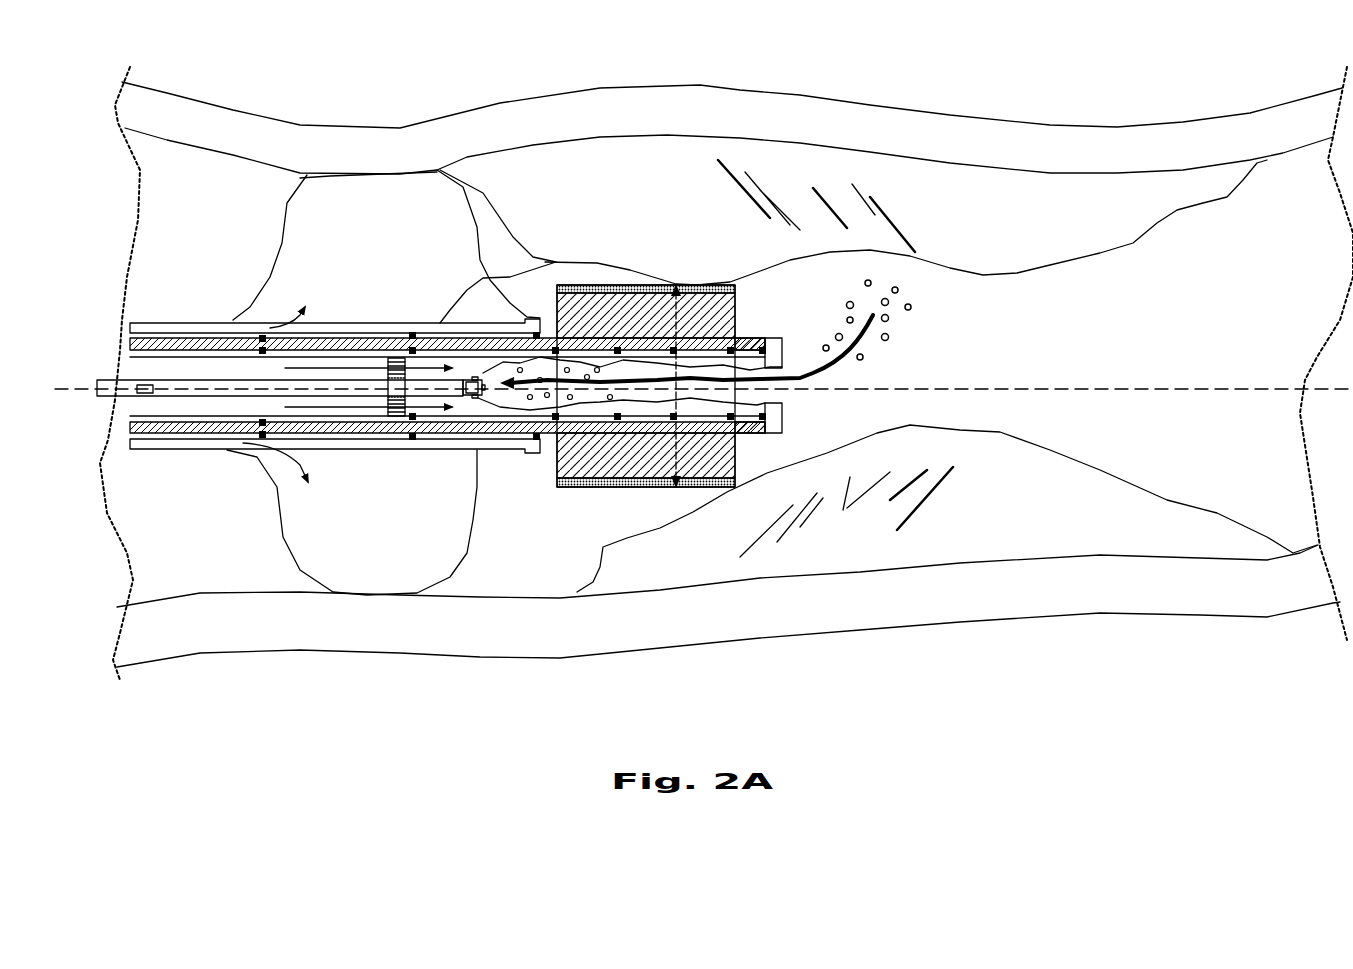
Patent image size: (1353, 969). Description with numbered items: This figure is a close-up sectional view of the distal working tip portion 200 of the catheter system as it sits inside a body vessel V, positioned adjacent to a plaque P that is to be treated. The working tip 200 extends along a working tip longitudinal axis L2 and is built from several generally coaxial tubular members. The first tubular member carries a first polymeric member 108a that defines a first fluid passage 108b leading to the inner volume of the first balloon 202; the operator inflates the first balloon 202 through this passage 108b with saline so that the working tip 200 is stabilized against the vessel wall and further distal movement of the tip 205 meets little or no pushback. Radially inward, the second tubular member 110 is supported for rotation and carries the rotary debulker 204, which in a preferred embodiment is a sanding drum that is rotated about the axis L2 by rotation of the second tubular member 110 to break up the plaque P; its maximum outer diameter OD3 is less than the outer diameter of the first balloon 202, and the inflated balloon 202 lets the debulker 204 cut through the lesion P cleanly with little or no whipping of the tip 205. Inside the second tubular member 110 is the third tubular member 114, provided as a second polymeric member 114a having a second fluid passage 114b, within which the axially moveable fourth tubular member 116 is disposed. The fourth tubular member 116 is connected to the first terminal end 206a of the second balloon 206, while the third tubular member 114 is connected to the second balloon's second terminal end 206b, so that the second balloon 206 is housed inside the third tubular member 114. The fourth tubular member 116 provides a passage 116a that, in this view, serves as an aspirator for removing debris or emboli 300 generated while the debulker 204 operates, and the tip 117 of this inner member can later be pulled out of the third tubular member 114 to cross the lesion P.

The vessel V is at (726, 350).
The plaque P is at (931, 376).
The first balloon 202 is at (386, 205).
The first polymeric member 108a is at (322, 244).
The first fluid passage 108b is at (498, 238).
The working tip portion 200 is at (341, 522).
The second tubular member 110 is at (333, 350).
The third tubular member 114 is at (448, 313).
The second polymeric member 114a is at (445, 453).
The second fluid passage 114b is at (320, 386).
The fourth tubular member 116 is at (447, 297).
The passage 116a is at (447, 462).
The tip 117 is at (336, 474).
The first terminal end 206a is at (503, 455).
The rotary debulker 204 is at (646, 347).
The second balloon 206 is at (764, 300).
The tip 205 is at (773, 444).
The second terminal end 206b is at (824, 418).
The maximum outer diameter of the rotary debulker OD3 is at (718, 442).
The debris or emboli 300 is at (694, 343).
The working tip longitudinal axis L2 is at (719, 351).